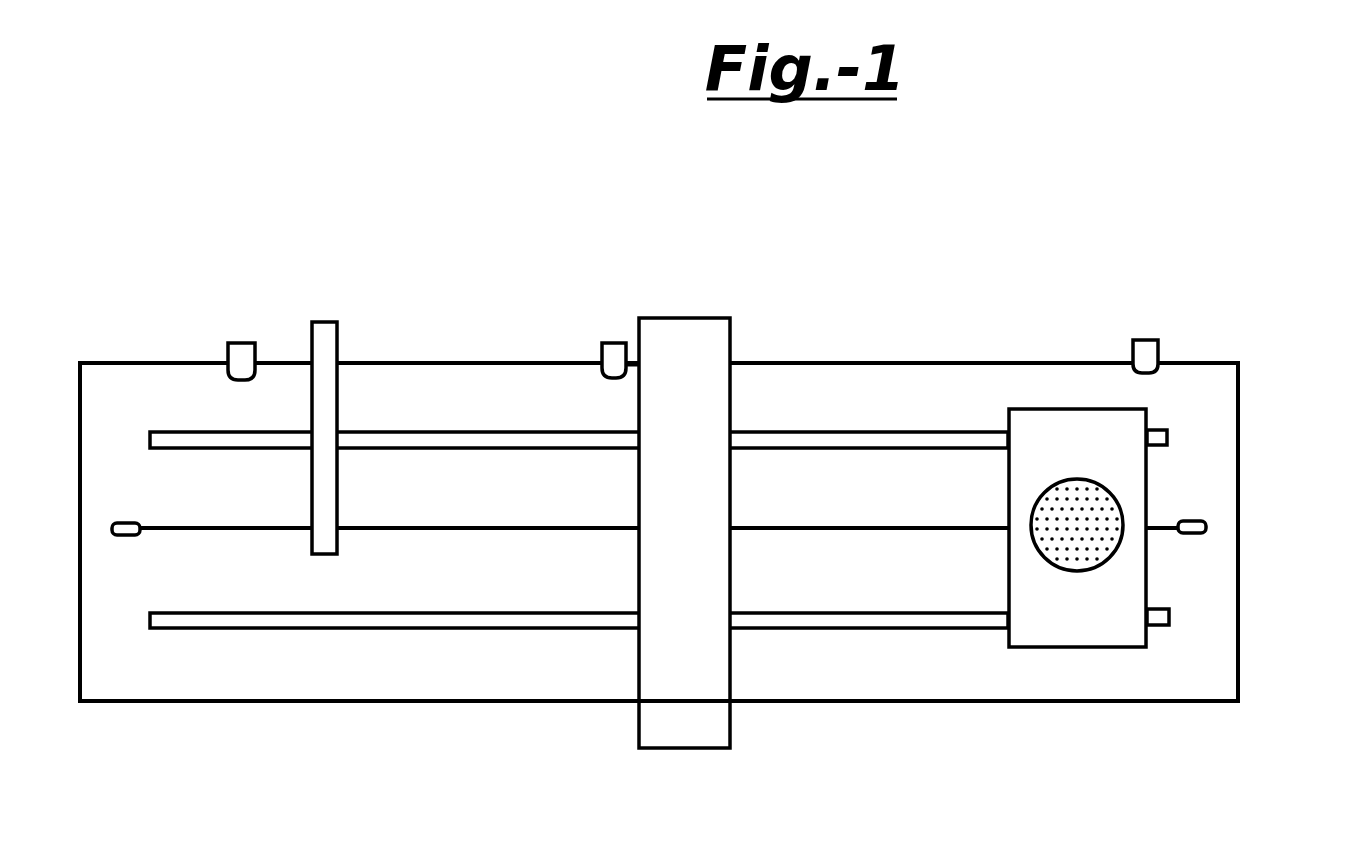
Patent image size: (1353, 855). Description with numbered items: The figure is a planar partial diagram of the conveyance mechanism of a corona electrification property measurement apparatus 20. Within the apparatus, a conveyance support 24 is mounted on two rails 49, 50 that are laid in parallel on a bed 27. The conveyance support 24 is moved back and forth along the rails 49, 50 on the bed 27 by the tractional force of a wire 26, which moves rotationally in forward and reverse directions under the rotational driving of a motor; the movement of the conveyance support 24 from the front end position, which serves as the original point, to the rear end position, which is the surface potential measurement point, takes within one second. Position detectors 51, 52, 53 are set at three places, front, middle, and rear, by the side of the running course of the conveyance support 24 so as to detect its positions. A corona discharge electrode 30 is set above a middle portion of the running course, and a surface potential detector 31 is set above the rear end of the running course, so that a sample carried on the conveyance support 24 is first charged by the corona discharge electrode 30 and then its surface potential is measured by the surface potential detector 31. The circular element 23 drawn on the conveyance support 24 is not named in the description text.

The corona electrification property measurement apparatus 20 is at (1203, 410).
The ball 23 is at (1085, 515).
The conveyance support 24 is at (1038, 437).
The wire 26 is at (857, 525).
The bed 27 is at (403, 686).
The corona discharge electrode 30 is at (678, 345).
The surface potential detector 31 is at (324, 338).
The rail 49 is at (166, 432).
The rail 50 is at (160, 627).
The position detector 51 is at (1143, 340).
The position detector 52 is at (611, 345).
The position detector 53 is at (244, 343).